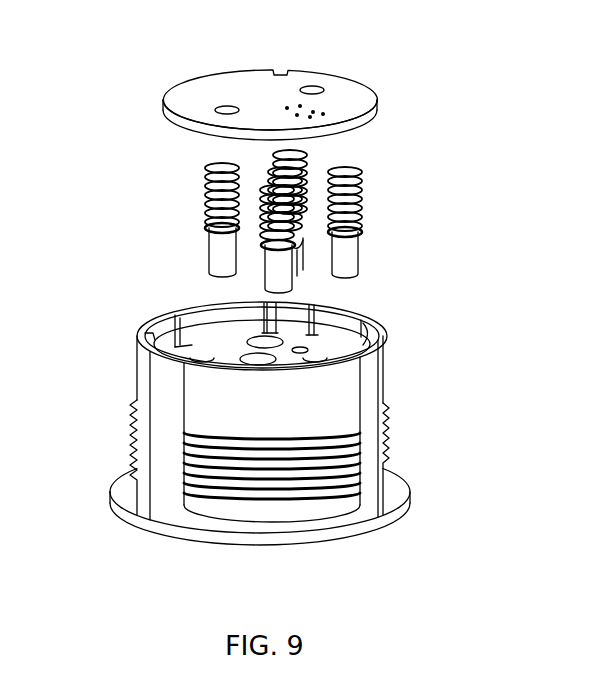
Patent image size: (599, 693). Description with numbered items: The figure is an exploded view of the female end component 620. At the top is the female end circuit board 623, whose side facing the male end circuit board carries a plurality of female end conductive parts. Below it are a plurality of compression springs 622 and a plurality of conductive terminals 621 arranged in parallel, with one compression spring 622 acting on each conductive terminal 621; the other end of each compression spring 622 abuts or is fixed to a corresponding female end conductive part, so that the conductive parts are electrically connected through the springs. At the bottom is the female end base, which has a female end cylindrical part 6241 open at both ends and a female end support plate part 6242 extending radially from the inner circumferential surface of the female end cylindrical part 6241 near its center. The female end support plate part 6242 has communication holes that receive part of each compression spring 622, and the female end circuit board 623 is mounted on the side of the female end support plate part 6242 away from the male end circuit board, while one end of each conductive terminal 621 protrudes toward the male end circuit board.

The female end component 620 is at (108, 73).
The conductive terminal 621 is at (360, 261).
The compression spring 622 is at (360, 213).
The female end circuit board 623 is at (363, 122).
The female end cylindrical part 6241 is at (372, 395).
The female end support plate part 6242 is at (220, 347).